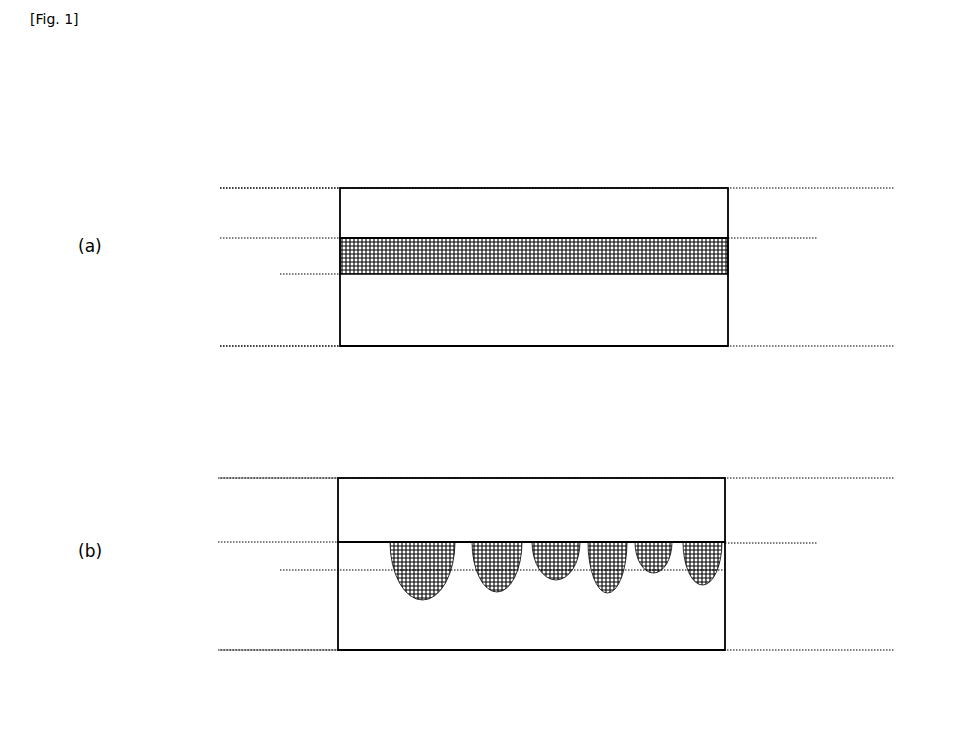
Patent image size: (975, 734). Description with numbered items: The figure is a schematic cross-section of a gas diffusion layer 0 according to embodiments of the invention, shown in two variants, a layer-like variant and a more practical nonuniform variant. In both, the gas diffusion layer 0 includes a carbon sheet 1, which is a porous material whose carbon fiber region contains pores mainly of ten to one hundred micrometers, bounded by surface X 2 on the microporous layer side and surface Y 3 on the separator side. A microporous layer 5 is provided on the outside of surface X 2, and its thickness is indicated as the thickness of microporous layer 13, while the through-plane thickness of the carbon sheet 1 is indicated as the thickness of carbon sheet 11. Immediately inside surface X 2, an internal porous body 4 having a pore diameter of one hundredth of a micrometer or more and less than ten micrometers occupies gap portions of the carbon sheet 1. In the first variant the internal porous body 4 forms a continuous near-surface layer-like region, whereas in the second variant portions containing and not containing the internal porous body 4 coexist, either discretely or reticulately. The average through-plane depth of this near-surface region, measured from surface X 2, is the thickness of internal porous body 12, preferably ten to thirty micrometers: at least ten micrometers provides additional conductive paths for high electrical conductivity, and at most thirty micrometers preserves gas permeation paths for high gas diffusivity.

The gas diffusion layer 0 is at (880, 188).
The carbon sheet 1 is at (806, 238).
The surface X 2 is at (520, 237).
The surface Y 3 is at (387, 346).
The internal porous body 4 is at (735, 238).
The microporous layer 5 is at (695, 207).
The thickness of carbon sheet 11 is at (261, 242).
The thickness of internal porous body 12 is at (315, 242).
The thickness of microporous layer 13 is at (261, 192).